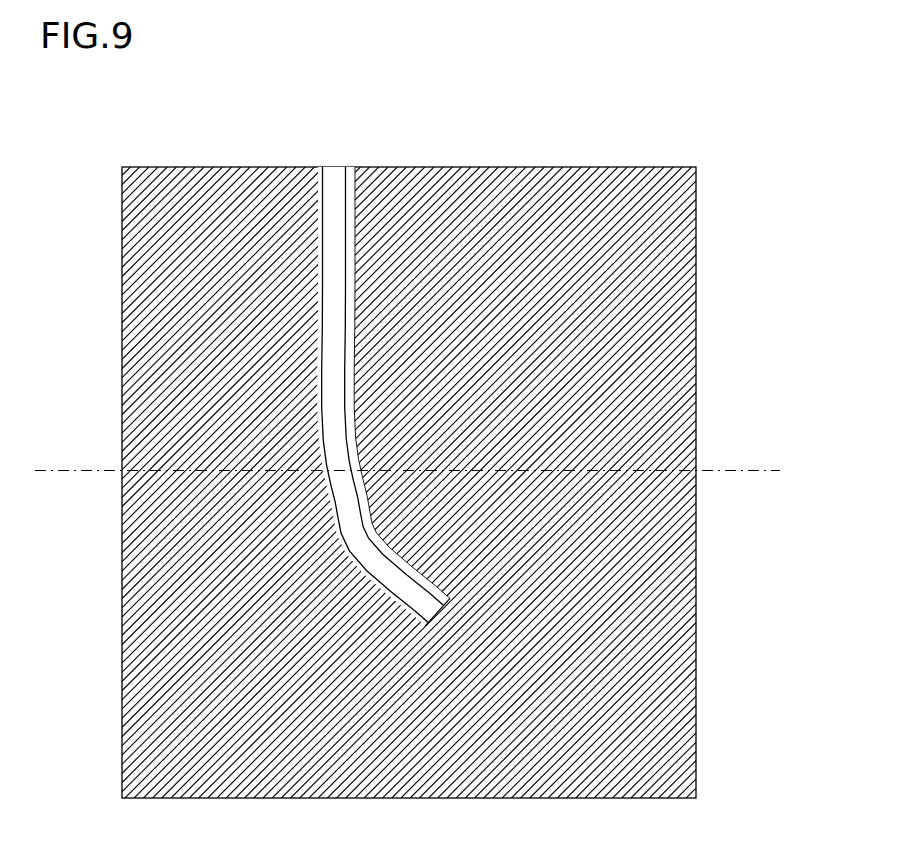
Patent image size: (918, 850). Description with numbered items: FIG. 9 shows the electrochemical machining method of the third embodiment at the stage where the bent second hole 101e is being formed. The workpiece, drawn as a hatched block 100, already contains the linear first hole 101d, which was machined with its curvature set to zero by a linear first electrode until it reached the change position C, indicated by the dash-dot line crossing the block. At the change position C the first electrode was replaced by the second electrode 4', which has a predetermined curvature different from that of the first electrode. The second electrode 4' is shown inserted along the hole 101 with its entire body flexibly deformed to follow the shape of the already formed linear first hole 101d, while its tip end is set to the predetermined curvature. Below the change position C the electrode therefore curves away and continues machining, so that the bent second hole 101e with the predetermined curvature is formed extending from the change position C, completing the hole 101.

The block 100 is at (430, 215).
The hole 101 is at (364, 213).
The linear first hole 101d is at (350, 306).
The bent second hole 101e is at (430, 625).
The second electrode 4' is at (383, 351).
The change position C is at (730, 470).